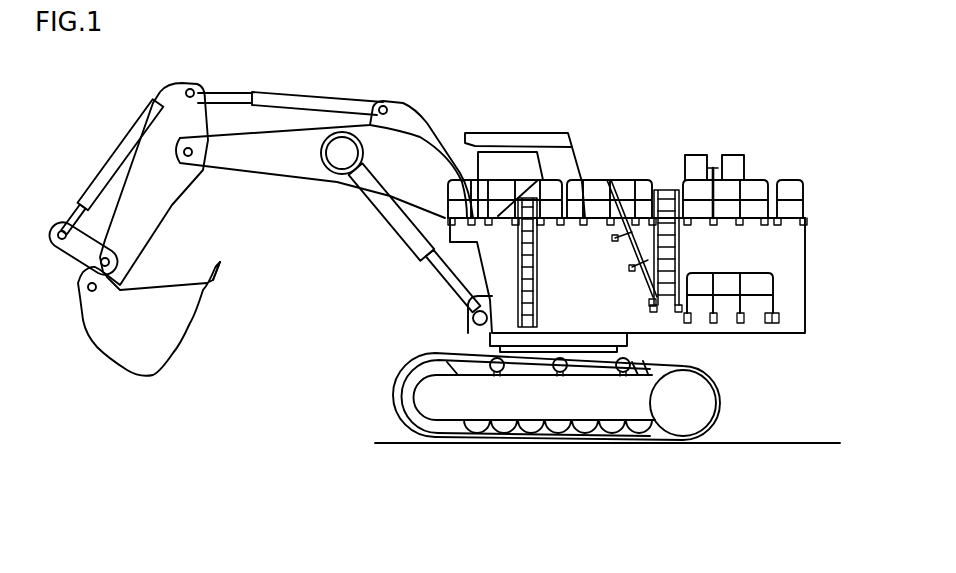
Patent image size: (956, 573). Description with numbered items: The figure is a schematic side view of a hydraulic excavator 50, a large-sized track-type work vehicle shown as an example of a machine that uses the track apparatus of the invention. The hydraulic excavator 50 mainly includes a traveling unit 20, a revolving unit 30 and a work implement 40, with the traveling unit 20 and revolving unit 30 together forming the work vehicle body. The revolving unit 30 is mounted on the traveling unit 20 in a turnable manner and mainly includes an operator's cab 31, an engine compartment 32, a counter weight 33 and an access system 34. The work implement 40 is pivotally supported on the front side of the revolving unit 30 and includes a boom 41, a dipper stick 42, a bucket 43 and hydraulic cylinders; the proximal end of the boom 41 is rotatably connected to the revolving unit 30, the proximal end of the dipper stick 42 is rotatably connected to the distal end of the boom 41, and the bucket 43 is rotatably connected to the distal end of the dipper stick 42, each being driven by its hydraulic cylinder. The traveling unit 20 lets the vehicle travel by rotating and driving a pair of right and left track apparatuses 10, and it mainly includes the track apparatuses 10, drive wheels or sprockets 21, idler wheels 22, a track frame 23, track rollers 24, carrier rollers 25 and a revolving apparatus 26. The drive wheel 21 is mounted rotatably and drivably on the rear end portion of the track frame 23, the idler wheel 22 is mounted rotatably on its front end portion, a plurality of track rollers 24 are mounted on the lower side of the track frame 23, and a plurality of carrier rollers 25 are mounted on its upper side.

The track apparatus 10 is at (710, 383).
The traveling unit 20 is at (727, 405).
The drive wheel (sprocket) 21 is at (683, 420).
The idler wheel (idler) 22 is at (435, 425).
The track frame 23 is at (558, 403).
The track roller 24 is at (637, 427).
The carrier roller 25 is at (633, 360).
The revolving apparatus 26 is at (498, 348).
The revolving unit 30 is at (815, 208).
The operator's cab 31 is at (545, 133).
The engine compartment 32 is at (727, 247).
The counter weight 33 is at (805, 280).
The access system 34 is at (672, 188).
The work implement 40 is at (110, 133).
The boom 41 is at (288, 160).
The dipper stick 42 is at (157, 197).
The bucket 43 is at (173, 333).
The hydraulic excavator 50 is at (508, 88).